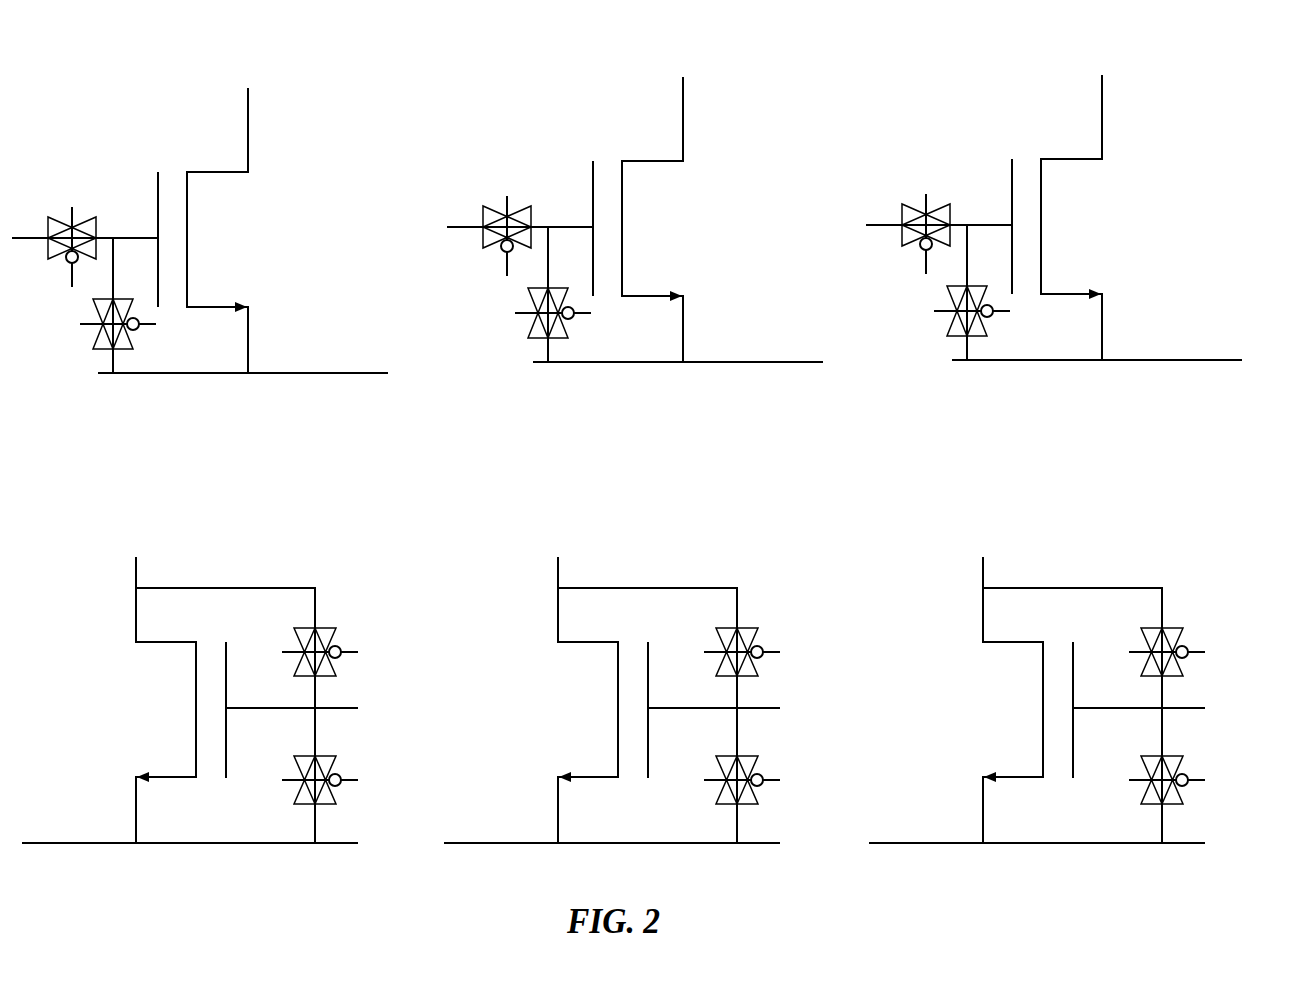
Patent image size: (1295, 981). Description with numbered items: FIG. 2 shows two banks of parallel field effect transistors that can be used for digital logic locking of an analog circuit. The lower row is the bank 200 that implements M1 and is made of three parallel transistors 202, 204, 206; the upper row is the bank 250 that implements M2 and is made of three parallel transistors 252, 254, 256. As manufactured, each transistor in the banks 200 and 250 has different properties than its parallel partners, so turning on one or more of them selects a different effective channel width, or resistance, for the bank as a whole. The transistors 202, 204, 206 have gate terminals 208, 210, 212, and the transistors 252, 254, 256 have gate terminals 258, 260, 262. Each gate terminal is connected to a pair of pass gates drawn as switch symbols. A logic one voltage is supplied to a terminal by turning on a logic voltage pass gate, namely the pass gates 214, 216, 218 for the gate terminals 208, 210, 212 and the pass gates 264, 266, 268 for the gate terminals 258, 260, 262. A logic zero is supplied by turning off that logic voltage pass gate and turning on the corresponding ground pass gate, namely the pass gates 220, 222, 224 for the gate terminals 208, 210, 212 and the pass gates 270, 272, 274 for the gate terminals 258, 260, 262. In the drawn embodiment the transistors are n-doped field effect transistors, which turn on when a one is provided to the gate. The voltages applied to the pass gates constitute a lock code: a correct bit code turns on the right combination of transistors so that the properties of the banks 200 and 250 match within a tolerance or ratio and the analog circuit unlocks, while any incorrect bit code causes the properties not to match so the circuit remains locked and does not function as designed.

The bank of parallel transistors 200 is at (640, 671).
The transistor 202 is at (138, 700).
The transistor 204 is at (612, 700).
The transistor 206 is at (1037, 700).
The gate terminal 208 is at (318, 707).
The gate terminal 210 is at (741, 710).
The gate terminal 212 is at (1166, 710).
The logic voltage pass gate 214 is at (335, 618).
The logic voltage pass gate 216 is at (757, 597).
The logic voltage pass gate 218 is at (1182, 597).
The ground pass gate 220 is at (343, 800).
The ground pass gate 222 is at (767, 817).
The ground pass gate 224 is at (1192, 817).
The bank of parallel transistors 250 is at (627, 222).
The transistor 252 is at (282, 192).
The transistor 254 is at (678, 219).
The transistor 256 is at (1097, 217).
The gate terminal 258 is at (157, 237).
The gate terminal 260 is at (520, 207).
The gate terminal 262 is at (939, 205).
The logic voltage pass gate 264 is at (57, 282).
The logic voltage pass gate 266 is at (491, 272).
The logic voltage pass gate 268 is at (910, 270).
The ground pass gate 270 is at (148, 345).
The ground pass gate 272 is at (586, 323).
The ground pass gate 274 is at (1005, 321).